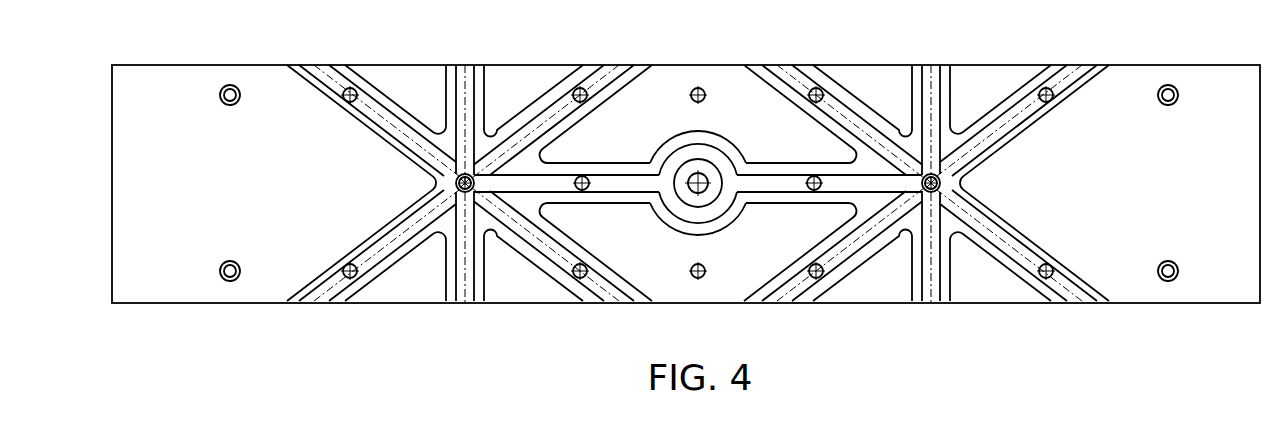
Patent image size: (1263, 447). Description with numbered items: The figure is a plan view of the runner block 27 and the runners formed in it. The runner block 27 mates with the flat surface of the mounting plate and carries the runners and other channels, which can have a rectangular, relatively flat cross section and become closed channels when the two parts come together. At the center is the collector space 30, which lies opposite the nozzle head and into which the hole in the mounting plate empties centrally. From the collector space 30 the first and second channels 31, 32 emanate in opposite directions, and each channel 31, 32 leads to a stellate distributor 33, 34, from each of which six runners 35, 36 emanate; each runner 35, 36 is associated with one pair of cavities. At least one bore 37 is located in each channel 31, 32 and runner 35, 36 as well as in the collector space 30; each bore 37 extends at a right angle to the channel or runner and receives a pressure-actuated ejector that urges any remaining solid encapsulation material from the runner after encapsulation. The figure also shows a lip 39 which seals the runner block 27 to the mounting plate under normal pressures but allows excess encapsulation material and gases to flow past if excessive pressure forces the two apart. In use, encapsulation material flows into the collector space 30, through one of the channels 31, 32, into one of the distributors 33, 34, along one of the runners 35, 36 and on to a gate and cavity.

The runner block 27 is at (182, 292).
The collector space 30 is at (684, 140).
The first channel 31 is at (771, 188).
The second channel 32 is at (625, 188).
The stellate distributor 33 is at (964, 100).
The stellate distributor 34 is at (432, 100).
The runner 35 is at (847, 118).
The runner 36 is at (468, 65).
The bore 37 is at (437, 196).
The lip 39 is at (497, 65).